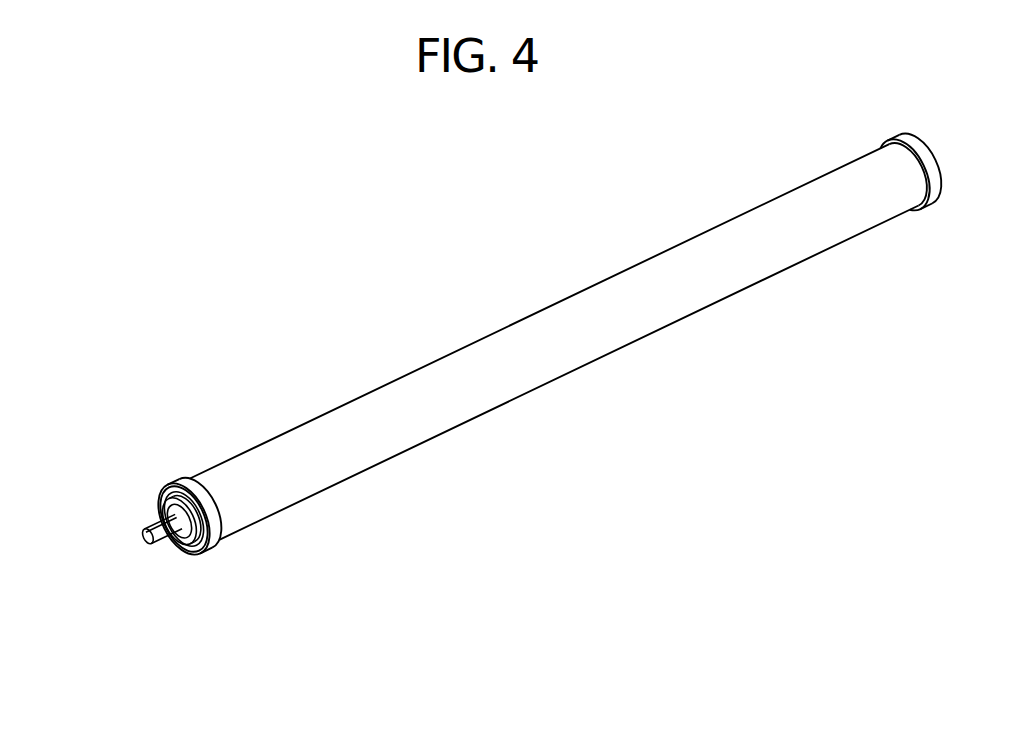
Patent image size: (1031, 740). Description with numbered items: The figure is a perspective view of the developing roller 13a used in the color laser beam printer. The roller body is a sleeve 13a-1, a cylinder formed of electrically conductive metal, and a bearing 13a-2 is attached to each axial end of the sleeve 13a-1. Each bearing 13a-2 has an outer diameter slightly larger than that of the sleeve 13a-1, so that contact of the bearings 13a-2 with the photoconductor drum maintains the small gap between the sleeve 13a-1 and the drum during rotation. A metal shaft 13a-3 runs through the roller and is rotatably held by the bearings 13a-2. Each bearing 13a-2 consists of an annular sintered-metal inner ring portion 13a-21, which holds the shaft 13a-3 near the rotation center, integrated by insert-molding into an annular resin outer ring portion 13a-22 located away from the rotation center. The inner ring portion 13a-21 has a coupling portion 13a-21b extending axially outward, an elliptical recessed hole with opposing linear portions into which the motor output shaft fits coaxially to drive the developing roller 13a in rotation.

The developing roller 13a is at (622, 218).
The sleeve 13a-1 is at (617, 342).
The bearing 13a-2 is at (930, 205).
The inner ring portion 13a-21 is at (167, 483).
The outer ring portion 13a-22 is at (188, 483).
The coupling portion 13a-21b is at (202, 550).
The shaft 13a-3 is at (163, 547).